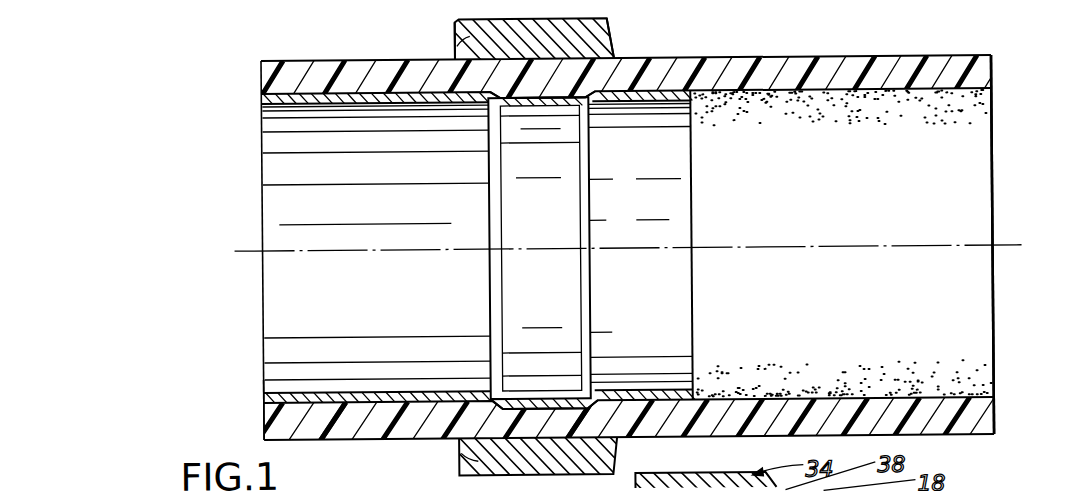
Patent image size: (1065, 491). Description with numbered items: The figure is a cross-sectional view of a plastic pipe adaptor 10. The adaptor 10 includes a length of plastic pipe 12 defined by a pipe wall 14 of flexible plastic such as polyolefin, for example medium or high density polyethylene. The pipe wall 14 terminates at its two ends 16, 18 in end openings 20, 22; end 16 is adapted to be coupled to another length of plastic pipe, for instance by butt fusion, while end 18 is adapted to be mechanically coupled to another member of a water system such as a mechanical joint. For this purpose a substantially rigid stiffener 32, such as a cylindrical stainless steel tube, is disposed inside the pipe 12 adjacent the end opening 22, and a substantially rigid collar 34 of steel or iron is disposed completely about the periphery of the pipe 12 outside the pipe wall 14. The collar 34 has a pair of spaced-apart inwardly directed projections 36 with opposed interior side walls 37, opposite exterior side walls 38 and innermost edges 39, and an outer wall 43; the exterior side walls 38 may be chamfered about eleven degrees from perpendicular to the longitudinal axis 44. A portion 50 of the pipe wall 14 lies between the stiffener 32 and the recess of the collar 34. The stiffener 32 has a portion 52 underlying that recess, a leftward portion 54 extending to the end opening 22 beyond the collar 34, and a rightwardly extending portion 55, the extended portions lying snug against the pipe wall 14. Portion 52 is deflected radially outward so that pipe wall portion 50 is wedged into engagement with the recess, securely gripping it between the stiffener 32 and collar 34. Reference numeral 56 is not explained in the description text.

The plastic pipe adaptor 10 is at (221, 392).
The plastic pipe 12 is at (883, 62).
The pipe wall 14 is at (867, 414).
The end 16 is at (994, 303).
The end 18 is at (263, 70).
The end opening 20 is at (992, 284).
The end opening 22 is at (264, 88).
The stiffener 32 is at (299, 137).
The collar 34 is at (614, 29).
The projections 36 is at (455, 47).
The interior side walls 37 is at (508, 490).
The exterior side walls 38 is at (458, 444).
The innermost edges 39 is at (567, 432).
The outer wall 43 is at (704, 480).
The longitudinal axis 44 is at (750, 251).
The pipe wall portion 50 is at (546, 59).
The stiffener portion 52 is at (532, 91).
The leftward portion 54 is at (410, 105).
The rightwardly extending portion 55 is at (668, 108).
The wall portion 56 is at (337, 408).